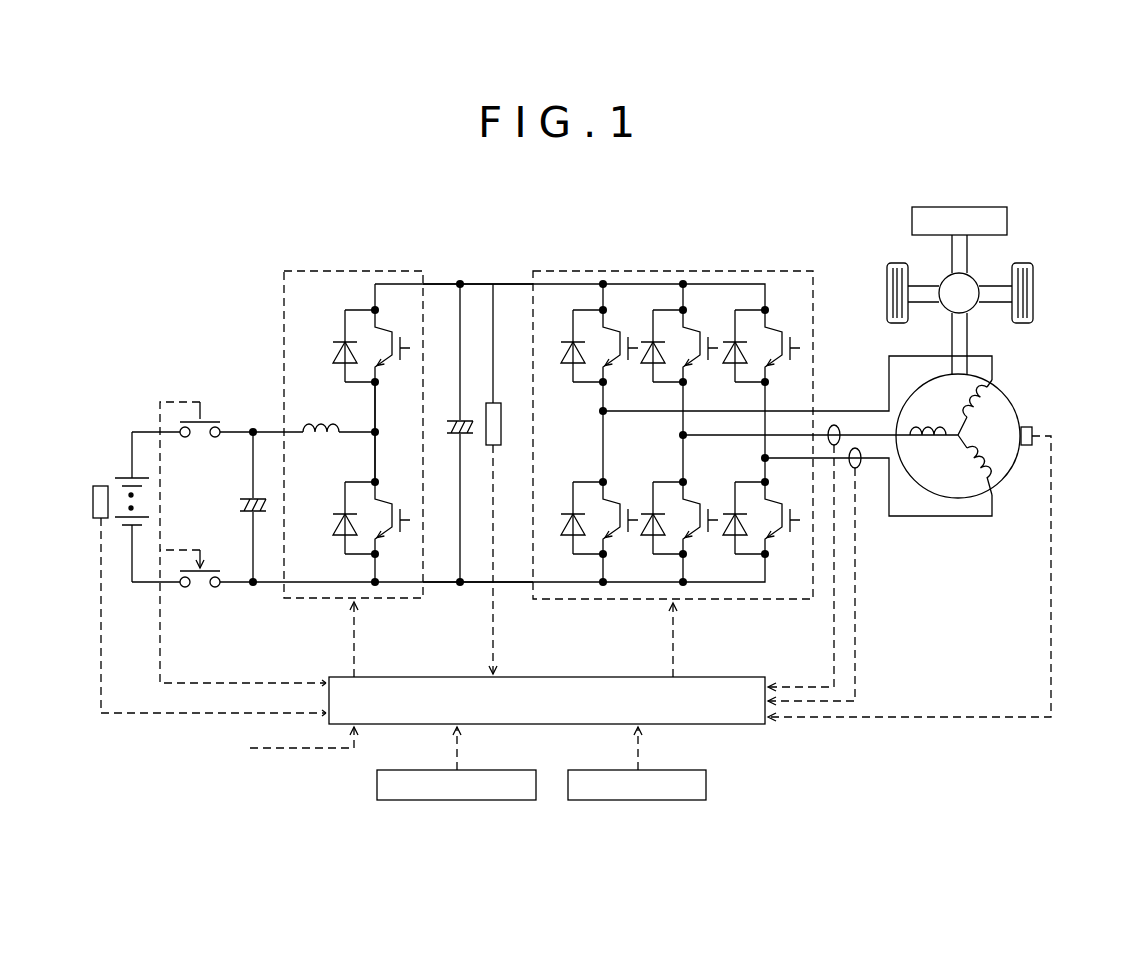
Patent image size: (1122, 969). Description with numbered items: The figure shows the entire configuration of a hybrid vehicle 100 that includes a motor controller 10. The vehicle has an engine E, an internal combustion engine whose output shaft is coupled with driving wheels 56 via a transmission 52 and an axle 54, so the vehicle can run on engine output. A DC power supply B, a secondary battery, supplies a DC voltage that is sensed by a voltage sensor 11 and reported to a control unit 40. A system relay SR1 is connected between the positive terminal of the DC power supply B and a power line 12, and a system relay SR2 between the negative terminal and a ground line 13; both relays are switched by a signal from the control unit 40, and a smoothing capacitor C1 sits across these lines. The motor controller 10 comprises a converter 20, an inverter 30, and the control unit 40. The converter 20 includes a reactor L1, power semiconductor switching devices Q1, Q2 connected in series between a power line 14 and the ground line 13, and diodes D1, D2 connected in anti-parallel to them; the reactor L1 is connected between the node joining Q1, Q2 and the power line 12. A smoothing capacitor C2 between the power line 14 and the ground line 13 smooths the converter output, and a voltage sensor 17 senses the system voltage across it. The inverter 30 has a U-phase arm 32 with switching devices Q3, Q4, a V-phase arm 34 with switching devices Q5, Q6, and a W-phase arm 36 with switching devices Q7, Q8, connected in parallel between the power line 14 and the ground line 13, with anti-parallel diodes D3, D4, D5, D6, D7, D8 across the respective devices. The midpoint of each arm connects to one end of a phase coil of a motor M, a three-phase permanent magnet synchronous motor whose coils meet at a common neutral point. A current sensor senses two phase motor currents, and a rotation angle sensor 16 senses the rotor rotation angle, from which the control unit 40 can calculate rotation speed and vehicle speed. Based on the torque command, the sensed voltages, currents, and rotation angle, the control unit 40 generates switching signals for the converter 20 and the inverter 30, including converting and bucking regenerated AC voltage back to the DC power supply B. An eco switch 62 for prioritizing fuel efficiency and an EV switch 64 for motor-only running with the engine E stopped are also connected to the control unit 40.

The hybrid vehicle 100 is at (465, 203).
The motor controller 10 is at (292, 251).
The voltage sensor 11 is at (99, 485).
The power line 12 is at (258, 430).
The ground line 13 is at (442, 584).
The power line 14 is at (494, 283).
The rotation angle sensor 16 is at (1032, 427).
The voltage sensor 17 is at (496, 402).
The converter 20 is at (354, 268).
The inverter 30 is at (670, 268).
The U-phase arm 32 is at (590, 416).
The V-phase arm 34 is at (671, 441).
The W-phase arm 36 is at (753, 464).
The control unit 40 is at (601, 676).
The transmission 52 is at (982, 284).
The axle 54 is at (927, 286).
The driving wheels 56 is at (886, 283).
The eco switch 62 is at (470, 801).
The EV switch 64 is at (645, 801).
The DC power supply B is at (122, 476).
The system relay SR1 is at (216, 420).
The system relay SR2 is at (218, 569).
The smoothing capacitor C1 is at (250, 498).
The smoothing capacitor C2 is at (456, 420).
The reactor L1 is at (313, 425).
The power semiconductor switching device Q1 is at (394, 344).
The power semiconductor switching device Q2 is at (394, 516).
The switching device Q3 is at (623, 345).
The switching device Q4 is at (623, 517).
The switching device Q5 is at (703, 345).
The switching device Q6 is at (703, 517).
The switching device Q7 is at (785, 345).
The switching device Q8 is at (785, 517).
The diode D1 is at (339, 346).
The diode D2 is at (339, 518).
The anti-parallel diode D3 is at (572, 347).
The anti-parallel diode D4 is at (572, 519).
The anti-parallel diode D5 is at (653, 352).
The anti-parallel diode D6 is at (653, 523).
The anti-parallel diode D7 is at (735, 352).
The anti-parallel diode D8 is at (735, 523).
The motor M is at (1010, 398).
The engine E is at (961, 206).